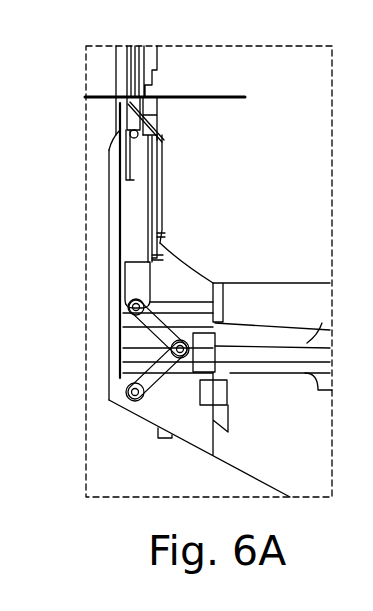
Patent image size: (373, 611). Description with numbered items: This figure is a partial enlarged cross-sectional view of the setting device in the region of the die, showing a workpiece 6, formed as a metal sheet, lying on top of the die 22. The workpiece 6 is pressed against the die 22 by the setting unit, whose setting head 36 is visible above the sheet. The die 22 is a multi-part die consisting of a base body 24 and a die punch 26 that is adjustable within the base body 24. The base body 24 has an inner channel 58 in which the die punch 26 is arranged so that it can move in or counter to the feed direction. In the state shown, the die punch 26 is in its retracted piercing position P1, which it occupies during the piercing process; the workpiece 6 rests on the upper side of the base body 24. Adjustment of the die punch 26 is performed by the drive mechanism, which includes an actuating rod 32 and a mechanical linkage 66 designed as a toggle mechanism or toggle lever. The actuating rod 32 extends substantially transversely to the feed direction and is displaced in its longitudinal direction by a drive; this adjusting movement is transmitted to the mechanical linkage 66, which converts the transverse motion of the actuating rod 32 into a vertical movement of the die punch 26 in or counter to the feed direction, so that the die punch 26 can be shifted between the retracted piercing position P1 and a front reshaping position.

The setting head 36 is at (116, 75).
The workpiece 6 is at (222, 95).
The base body 24 is at (118, 105).
The die 22 is at (118, 130).
The inner channel 58 is at (117, 182).
The die punch 26 is at (125, 228).
The retracted piercing position P1 is at (128, 289).
The mechanical linkage 66 is at (163, 368).
The actuating rod 32 is at (288, 358).